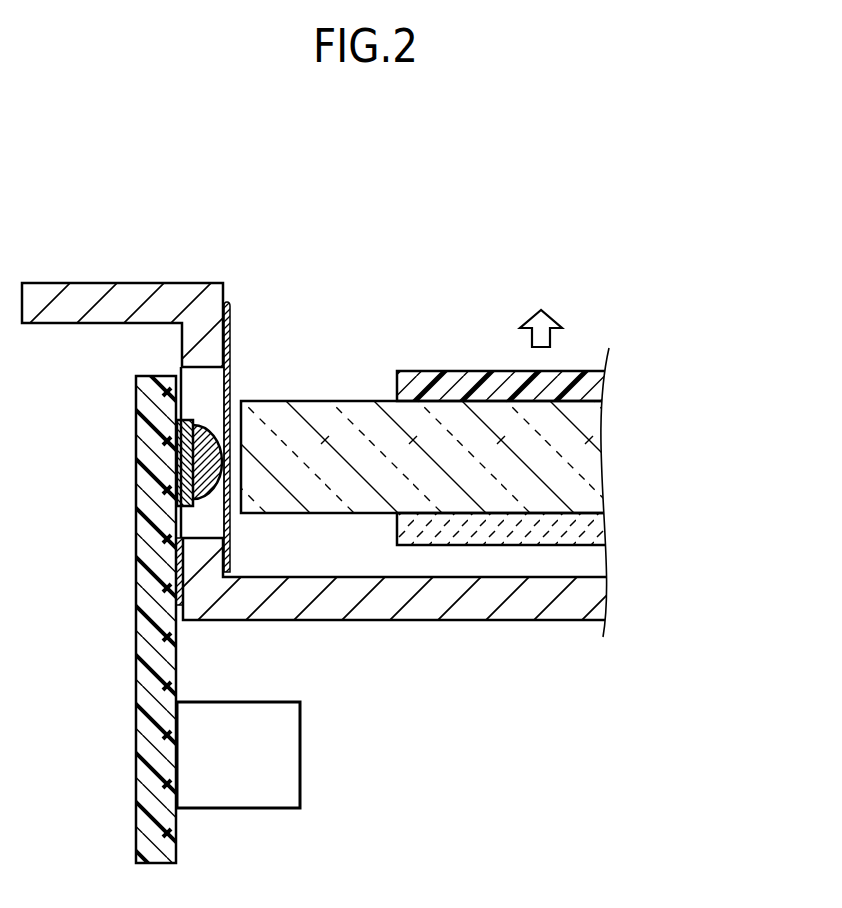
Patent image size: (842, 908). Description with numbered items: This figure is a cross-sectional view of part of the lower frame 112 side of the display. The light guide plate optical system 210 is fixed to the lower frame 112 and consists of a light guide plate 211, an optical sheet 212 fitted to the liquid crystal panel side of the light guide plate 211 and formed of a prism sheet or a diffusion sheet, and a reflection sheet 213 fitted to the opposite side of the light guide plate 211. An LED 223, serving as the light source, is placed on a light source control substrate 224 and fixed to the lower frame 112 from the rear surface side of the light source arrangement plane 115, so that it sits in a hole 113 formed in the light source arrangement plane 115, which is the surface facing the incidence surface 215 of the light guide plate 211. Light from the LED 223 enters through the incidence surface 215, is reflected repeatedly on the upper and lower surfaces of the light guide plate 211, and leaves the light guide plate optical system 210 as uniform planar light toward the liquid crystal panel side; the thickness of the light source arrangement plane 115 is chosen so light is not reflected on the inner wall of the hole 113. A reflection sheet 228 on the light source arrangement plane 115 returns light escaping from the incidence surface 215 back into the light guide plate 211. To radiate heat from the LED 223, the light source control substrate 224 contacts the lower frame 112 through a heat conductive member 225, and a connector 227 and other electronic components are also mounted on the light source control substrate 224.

The lower frame 112 is at (440, 622).
The hole 113 is at (212, 379).
The light source arrangement plane 115 is at (228, 303).
The light guide plate optical system 210 is at (396, 269).
The light guide plate 211 is at (598, 475).
The optical sheet 212 is at (597, 384).
The reflection sheet 213 is at (604, 529).
The incidence surface 215 is at (228, 415).
The LED 223 is at (196, 461).
The light source control substrate 224 is at (138, 522).
The heat conductive member 225 is at (180, 603).
The connector 227 is at (250, 808).
The reflection sheet 228 is at (228, 310).